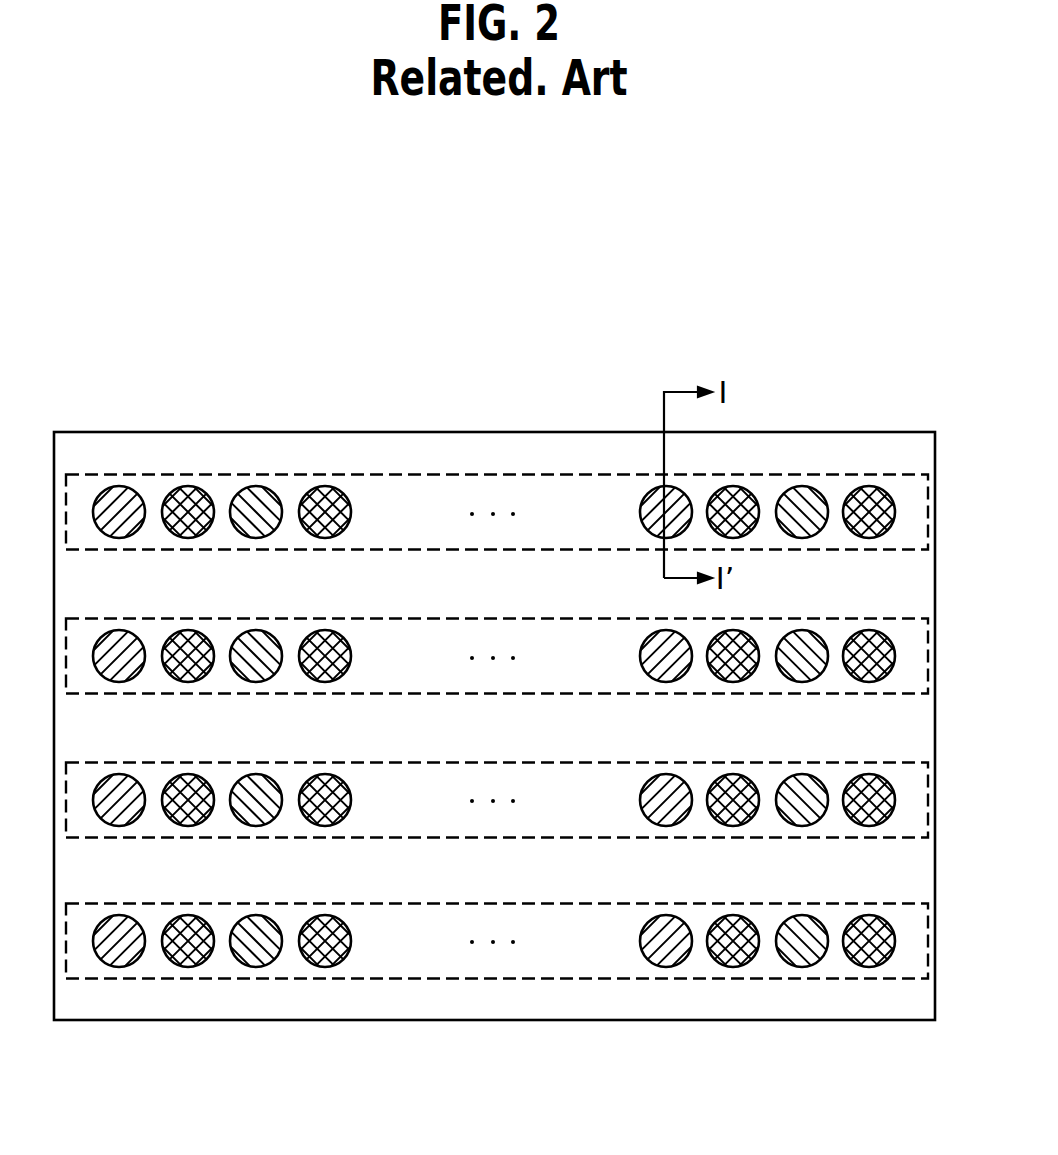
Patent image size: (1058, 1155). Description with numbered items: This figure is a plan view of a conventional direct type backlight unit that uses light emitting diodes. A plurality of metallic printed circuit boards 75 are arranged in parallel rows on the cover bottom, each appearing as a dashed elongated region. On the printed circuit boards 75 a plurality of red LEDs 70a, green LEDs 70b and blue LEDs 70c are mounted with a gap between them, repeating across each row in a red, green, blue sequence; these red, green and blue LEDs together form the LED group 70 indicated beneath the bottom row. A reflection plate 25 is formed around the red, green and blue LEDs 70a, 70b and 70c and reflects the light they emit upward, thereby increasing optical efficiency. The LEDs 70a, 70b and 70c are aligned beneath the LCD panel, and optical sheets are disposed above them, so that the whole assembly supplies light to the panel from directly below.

The reflection plate 25 is at (222, 448).
The metallic printed circuit boards 75 is at (413, 960).
The pixel 70 is at (494, 813).
The red LEDs 70a is at (670, 962).
The green LEDs 70b is at (745, 962).
The blue LEDs 70c is at (667, 1093).